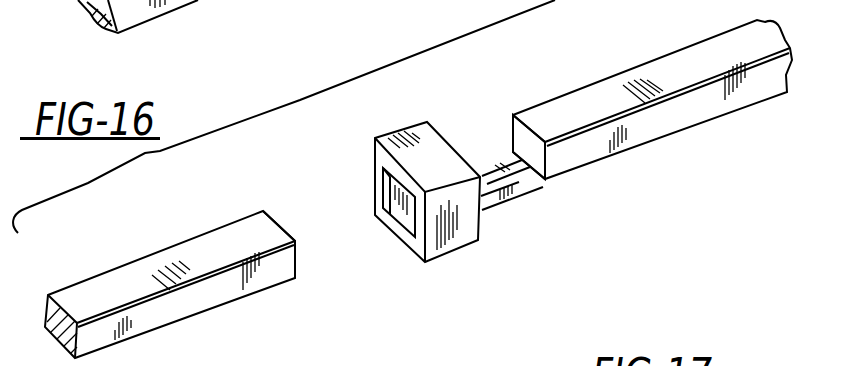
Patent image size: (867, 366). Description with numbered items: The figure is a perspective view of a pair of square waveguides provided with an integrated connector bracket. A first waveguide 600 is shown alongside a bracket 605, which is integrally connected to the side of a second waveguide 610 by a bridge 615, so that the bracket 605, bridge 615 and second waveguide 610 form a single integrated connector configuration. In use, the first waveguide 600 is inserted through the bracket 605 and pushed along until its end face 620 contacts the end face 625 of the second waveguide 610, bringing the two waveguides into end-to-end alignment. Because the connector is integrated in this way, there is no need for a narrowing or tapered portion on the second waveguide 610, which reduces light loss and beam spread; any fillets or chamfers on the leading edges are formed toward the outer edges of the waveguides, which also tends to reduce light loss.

The first waveguide 600 is at (126, 217).
The bracket 605 is at (392, 134).
The second waveguide 610 is at (589, 83).
The bridge 615 is at (523, 190).
The end face 620 is at (280, 222).
The end face 625 is at (522, 134).